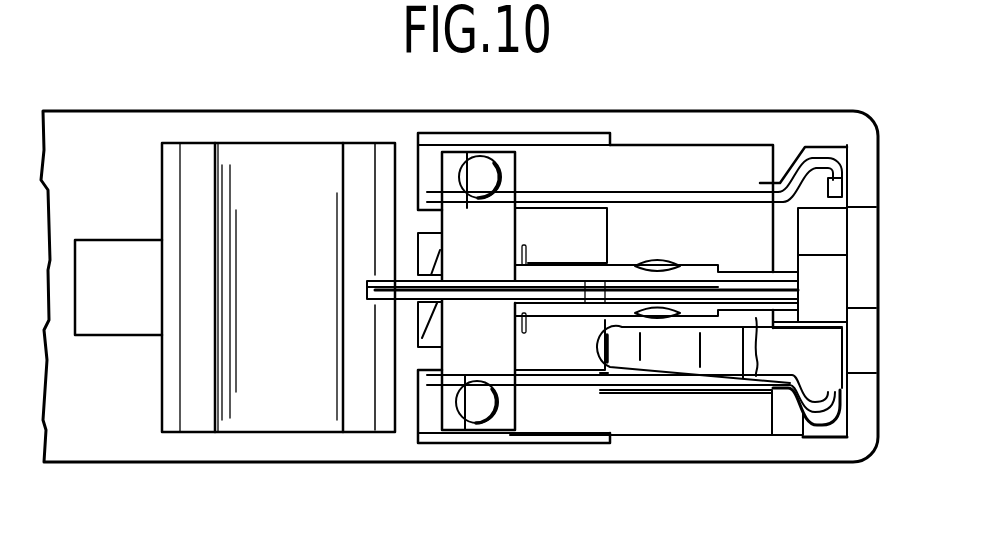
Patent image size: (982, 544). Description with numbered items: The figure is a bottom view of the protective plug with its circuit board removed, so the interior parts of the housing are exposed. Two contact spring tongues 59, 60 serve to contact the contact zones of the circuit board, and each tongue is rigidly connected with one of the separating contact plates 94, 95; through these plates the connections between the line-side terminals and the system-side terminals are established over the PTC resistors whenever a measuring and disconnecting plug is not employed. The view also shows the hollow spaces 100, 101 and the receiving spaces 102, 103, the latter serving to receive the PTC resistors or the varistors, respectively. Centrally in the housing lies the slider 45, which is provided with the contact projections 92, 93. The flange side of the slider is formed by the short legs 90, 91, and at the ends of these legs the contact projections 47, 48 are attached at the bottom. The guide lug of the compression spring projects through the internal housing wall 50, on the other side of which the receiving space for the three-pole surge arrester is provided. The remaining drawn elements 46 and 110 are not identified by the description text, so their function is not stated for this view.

The slider 45 is at (730, 288).
The shaft 46 is at (383, 303).
The contact projection 47 is at (483, 163).
The contact projection 48 is at (477, 415).
The internal housing wall 50 is at (405, 165).
The contact spring tongue 59 is at (828, 340).
The contact spring tongue 60 is at (826, 238).
The short leg 90 is at (512, 237).
The short leg 91 is at (507, 358).
The contact projection 92 is at (661, 262).
The contact projection 93 is at (668, 312).
The separating contact plate 94 is at (696, 197).
The separating contact plate 95 is at (660, 386).
The hollow space 100 is at (744, 160).
The hollow space 101 is at (745, 424).
The receiving space 102 is at (772, 185).
The receiving space 103 is at (773, 395).
The block 110 is at (303, 410).